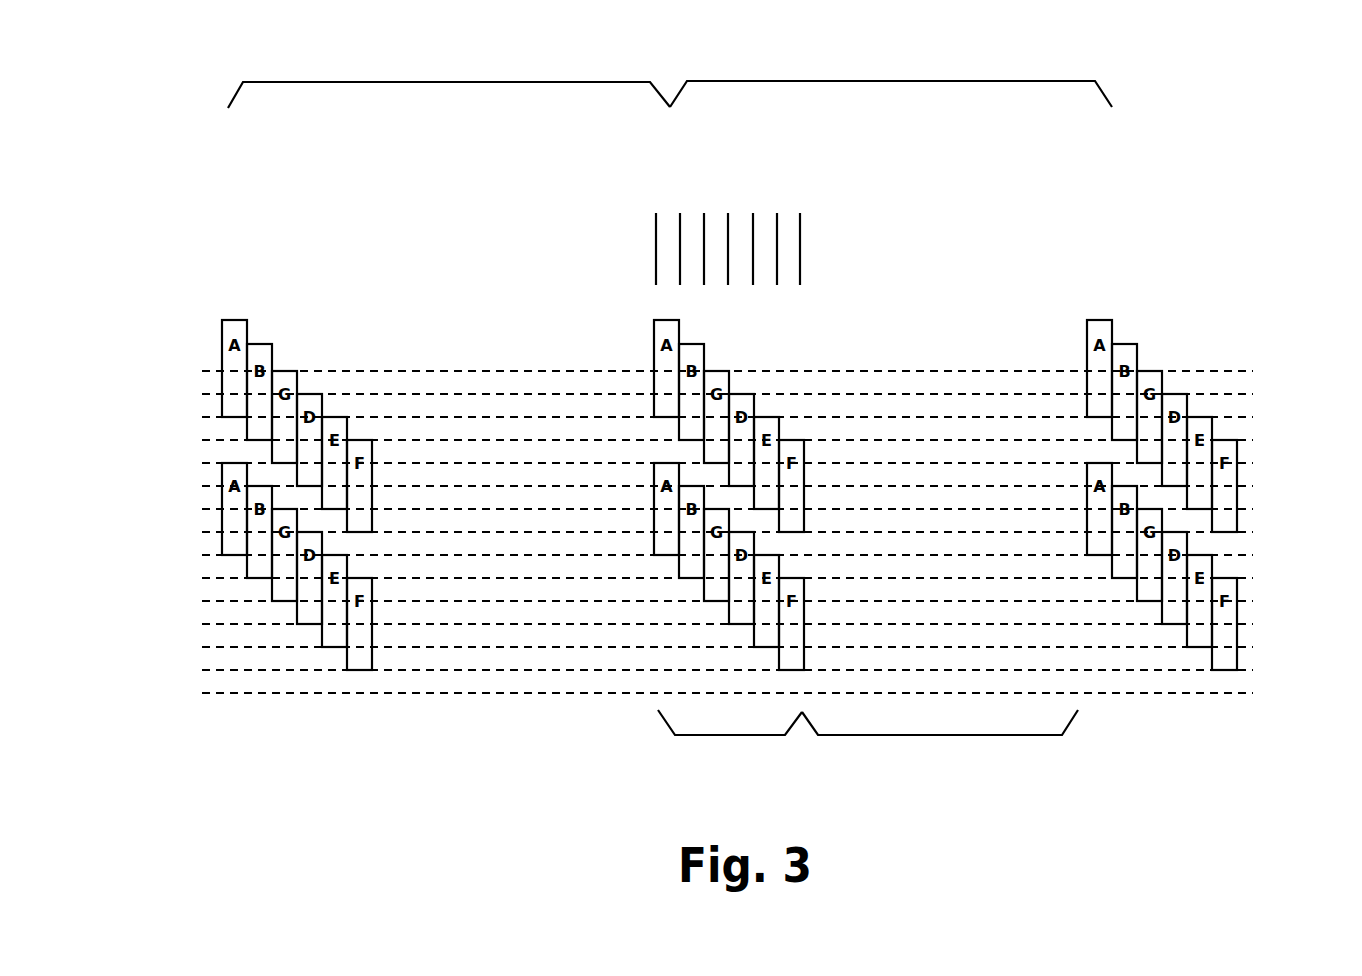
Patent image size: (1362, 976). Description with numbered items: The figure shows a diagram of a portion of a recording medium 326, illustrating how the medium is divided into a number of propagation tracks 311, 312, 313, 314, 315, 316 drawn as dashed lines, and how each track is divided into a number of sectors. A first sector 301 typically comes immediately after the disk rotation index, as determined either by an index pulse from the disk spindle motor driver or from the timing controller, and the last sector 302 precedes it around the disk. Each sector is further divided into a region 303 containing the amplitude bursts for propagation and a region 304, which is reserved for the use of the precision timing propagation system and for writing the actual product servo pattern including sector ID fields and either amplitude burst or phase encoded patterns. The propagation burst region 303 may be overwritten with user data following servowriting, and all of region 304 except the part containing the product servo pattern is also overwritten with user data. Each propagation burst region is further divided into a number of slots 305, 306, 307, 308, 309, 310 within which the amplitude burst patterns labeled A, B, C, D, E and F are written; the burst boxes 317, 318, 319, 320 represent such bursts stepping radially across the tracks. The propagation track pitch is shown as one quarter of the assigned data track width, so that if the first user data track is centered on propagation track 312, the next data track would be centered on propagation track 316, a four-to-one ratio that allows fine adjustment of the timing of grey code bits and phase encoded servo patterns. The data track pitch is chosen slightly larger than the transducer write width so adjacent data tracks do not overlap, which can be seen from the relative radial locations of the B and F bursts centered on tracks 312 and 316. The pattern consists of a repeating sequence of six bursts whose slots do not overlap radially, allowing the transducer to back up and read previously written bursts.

The first sector 301 is at (892, 81).
The last sector 302 is at (448, 82).
The region containing the amplitude bursts for propagation 303 is at (725, 737).
The region reserved for the precision timing propagation system 304 is at (940, 737).
The slot 305 is at (656, 213).
The slot 306 is at (680, 213).
The slot 307 is at (717, 218).
The slot 308 is at (742, 220).
The slot 309 is at (770, 218).
The slot 310 is at (788, 278).
The propagation track 311 is at (1203, 368).
The propagation track 312 is at (1240, 393).
The propagation track 313 is at (1250, 417).
The track centerline 314 is at (1250, 440).
The track centerline 315 is at (1250, 462).
The propagation track 316 is at (1250, 485).
The servo burst A 317 is at (667, 323).
The servo burst A 318 is at (1100, 323).
The servo burst B 319 is at (695, 347).
The servo burst B 320 is at (1127, 355).
The recording medium 326 is at (438, 715).